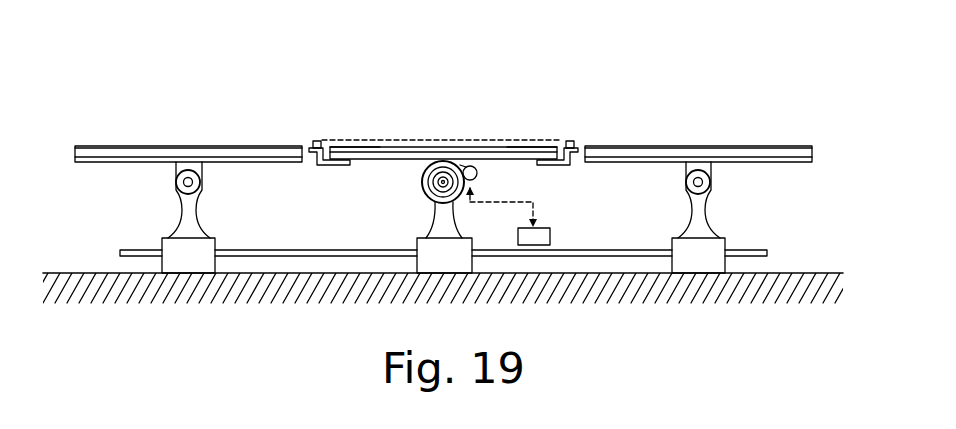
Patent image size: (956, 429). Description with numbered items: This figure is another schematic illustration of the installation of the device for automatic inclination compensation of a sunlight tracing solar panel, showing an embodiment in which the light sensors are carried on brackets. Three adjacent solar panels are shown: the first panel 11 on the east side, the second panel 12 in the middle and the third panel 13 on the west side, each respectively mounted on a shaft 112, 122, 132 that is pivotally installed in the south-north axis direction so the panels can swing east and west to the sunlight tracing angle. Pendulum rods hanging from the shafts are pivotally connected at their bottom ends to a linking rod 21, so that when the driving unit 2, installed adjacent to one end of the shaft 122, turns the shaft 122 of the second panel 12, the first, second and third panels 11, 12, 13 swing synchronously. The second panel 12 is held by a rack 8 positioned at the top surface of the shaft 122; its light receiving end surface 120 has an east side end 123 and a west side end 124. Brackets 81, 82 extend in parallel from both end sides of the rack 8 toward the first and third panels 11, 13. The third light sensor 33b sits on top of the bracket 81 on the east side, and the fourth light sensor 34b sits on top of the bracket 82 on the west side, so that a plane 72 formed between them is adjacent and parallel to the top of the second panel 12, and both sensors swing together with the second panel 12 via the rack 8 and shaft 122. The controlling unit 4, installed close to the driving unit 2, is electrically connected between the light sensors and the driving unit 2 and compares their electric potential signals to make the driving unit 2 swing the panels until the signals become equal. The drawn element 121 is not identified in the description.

The driving unit 2 is at (412, 217).
The controlling unit 4 is at (542, 236).
The rack 8 is at (413, 160).
The first panel 11 is at (772, 146).
The second panel 12 is at (477, 147).
The third panel 13 is at (147, 146).
The linking rod 21 is at (140, 250).
The third light sensor 33b is at (575, 141).
The fourth light sensor 34b is at (312, 141).
The plane 72 is at (444, 140).
The bracket 81 is at (553, 167).
The bracket 82 is at (327, 167).
The shaft 112 is at (704, 184).
The light receiving end surface 120 is at (308, 92).
The roller shaft 121 is at (436, 180).
The shaft 122 is at (434, 185).
The east side end 123 is at (532, 147).
The west side end 124 is at (355, 147).
The shaft 132 is at (195, 183).